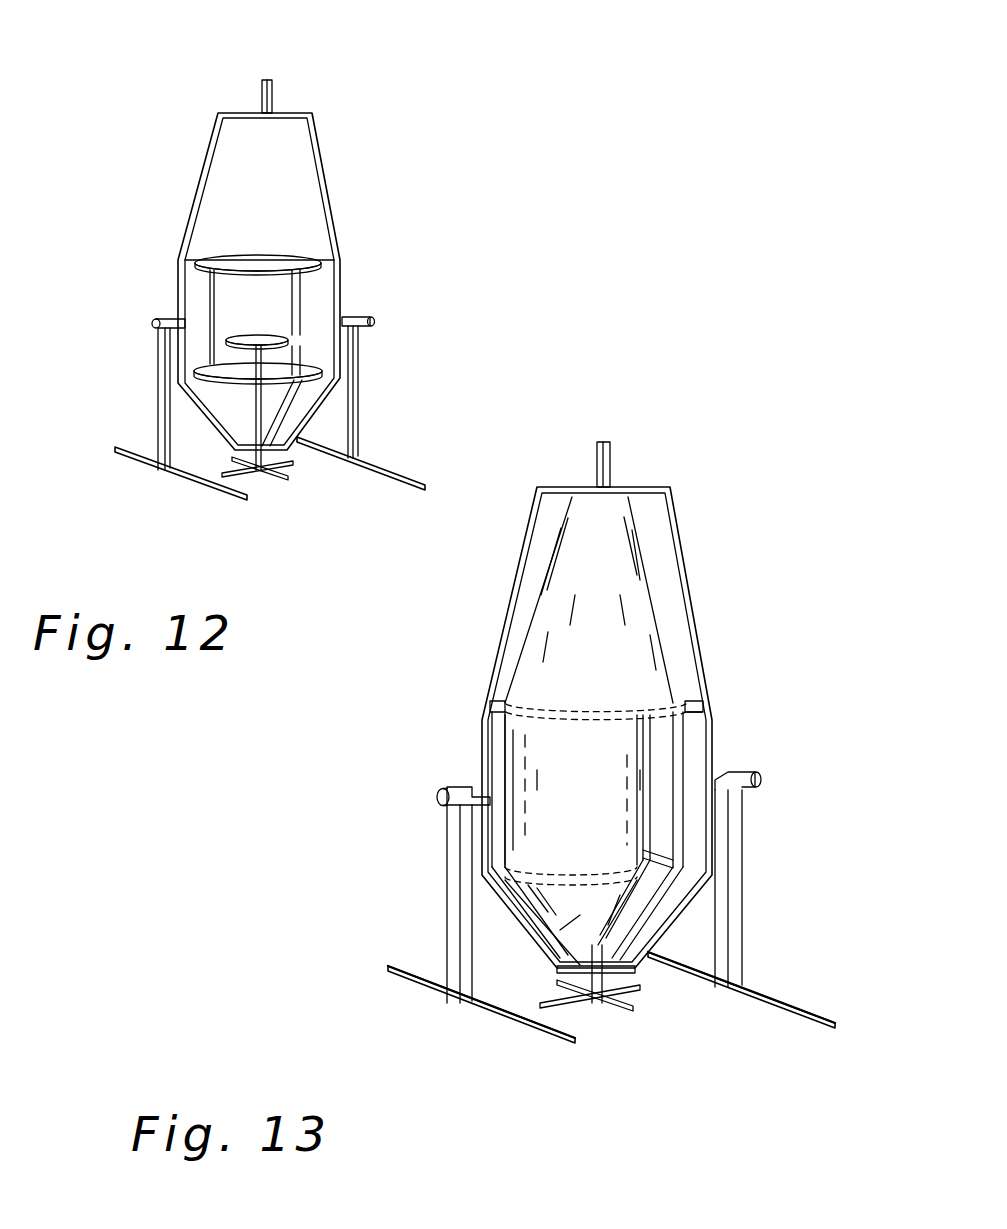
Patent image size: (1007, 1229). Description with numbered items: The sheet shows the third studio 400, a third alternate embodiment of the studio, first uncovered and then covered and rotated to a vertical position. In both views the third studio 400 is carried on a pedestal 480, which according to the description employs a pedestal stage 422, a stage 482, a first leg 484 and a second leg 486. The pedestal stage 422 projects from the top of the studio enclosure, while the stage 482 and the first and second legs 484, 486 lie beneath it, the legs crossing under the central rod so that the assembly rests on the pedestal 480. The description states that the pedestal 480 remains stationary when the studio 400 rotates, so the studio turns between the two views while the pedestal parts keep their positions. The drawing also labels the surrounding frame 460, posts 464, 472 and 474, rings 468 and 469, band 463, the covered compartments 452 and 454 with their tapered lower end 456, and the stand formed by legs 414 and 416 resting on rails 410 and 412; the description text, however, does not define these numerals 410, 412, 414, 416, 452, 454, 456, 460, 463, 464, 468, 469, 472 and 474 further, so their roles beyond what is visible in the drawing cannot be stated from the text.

In FIG. 12, the third studio 400 is at (145, 163).
In FIG. 13, the third studio 400 is at (777, 448).
In FIG. 13, the base rail 410 is at (510, 1013).
In FIG. 13, the base rail 412 is at (770, 992).
In FIG. 13, the support leg 414 is at (730, 875).
In FIG. 13, the support leg 416 is at (453, 883).
In FIG. 12, the pedestal stage 422 is at (270, 95).
In FIG. 13, the pedestal stage 422 is at (603, 470).
In FIG. 13, the upper bag compartment 452 is at (628, 680).
In FIG. 13, the lower bag compartment 454 is at (614, 825).
In FIG. 13, the bag cone bottom 456 is at (583, 903).
In FIG. 12, the cage frame 460 is at (338, 198).
In FIG. 13, the cage frame 460 is at (675, 530).
In FIG. 13, the ring band 463 is at (690, 722).
In FIG. 13, the cage post 464 is at (500, 702).
In FIG. 12, the upper ring 468 is at (262, 258).
In FIG. 13, the upper ring 468 is at (590, 710).
In FIG. 12, the lower ring 469 is at (237, 385).
In FIG. 13, the lower ring 469 is at (577, 877).
In FIG. 13, the cage post 472 is at (678, 755).
In FIG. 13, the cage post 474 is at (645, 788).
In FIG. 12, the pedestal 480 is at (250, 323).
In FIG. 13, the pedestal 480 is at (598, 1027).
In FIG. 12, the stage 482 is at (287, 480).
In FIG. 13, the stage 482 is at (633, 1008).
In FIG. 12, the first leg 484 is at (245, 473).
In FIG. 13, the first leg 484 is at (637, 1000).
In FIG. 12, the second leg 486 is at (262, 405).
In FIG. 13, the second leg 486 is at (598, 950).